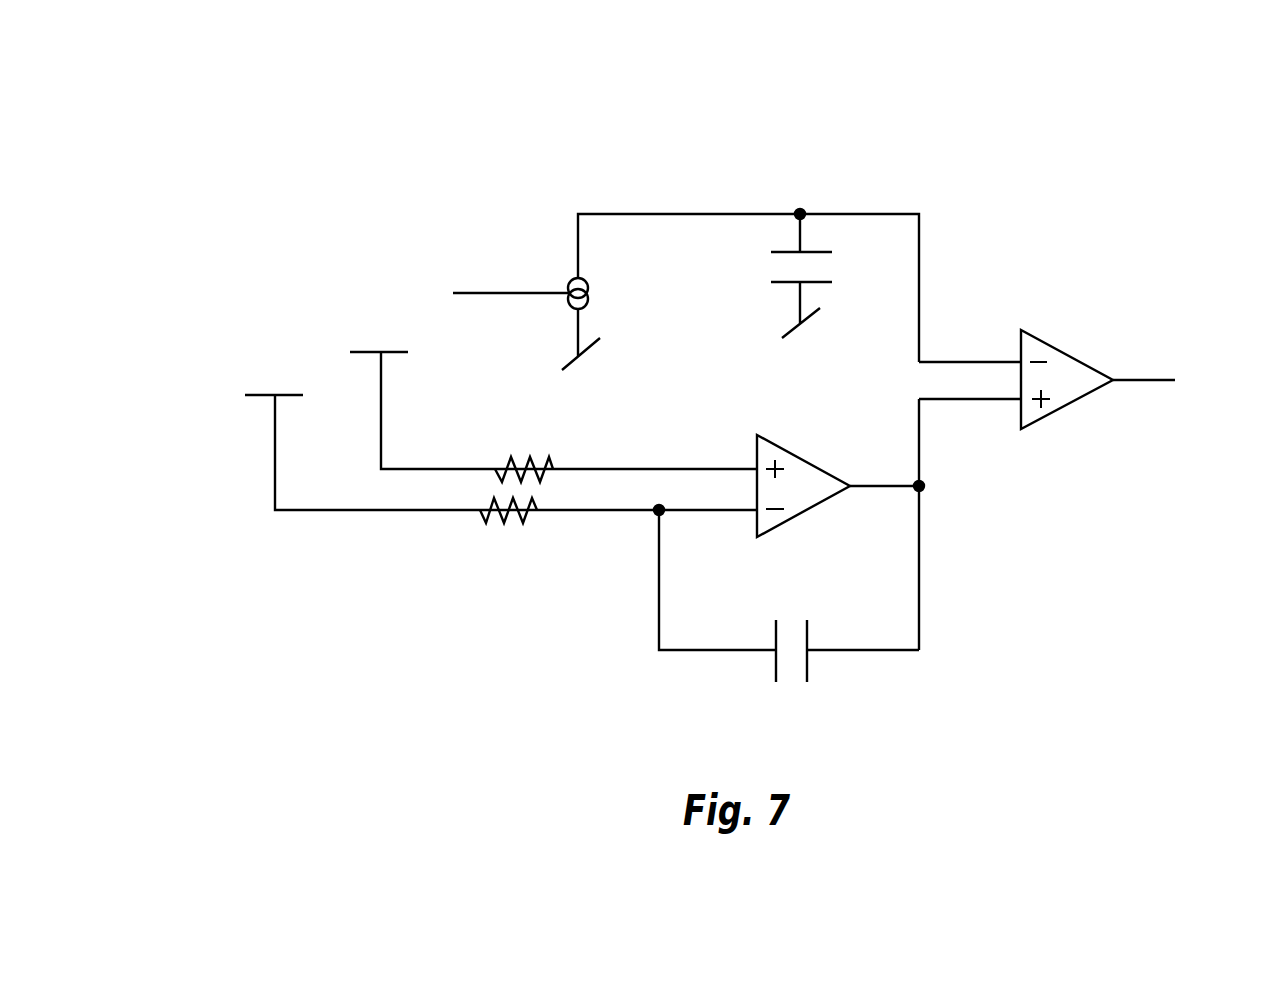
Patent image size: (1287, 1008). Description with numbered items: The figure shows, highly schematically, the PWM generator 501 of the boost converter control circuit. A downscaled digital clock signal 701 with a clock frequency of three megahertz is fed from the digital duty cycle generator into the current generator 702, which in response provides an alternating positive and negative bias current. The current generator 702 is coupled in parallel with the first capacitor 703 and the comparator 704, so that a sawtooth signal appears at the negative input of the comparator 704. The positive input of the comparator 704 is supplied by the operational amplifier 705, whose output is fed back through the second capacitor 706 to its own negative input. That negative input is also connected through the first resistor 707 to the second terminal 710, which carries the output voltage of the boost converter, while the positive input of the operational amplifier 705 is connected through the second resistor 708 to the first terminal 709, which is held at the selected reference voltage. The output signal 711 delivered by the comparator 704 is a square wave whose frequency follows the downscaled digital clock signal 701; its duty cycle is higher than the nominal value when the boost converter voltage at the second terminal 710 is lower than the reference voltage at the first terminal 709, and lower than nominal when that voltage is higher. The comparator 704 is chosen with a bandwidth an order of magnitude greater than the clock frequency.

The PWM generator 501 is at (794, 151).
The downscaled digital clock signal 701 is at (468, 292).
The current generator 702 is at (573, 284).
The first capacitor 703 is at (771, 252).
The comparator 704 is at (1032, 332).
The operational amplifier 705 is at (792, 452).
The second capacitor 706 is at (807, 672).
The first resistor 707 is at (487, 526).
The second resistor 708 is at (528, 457).
The first terminal 709 is at (350, 351).
The second terminal 710 is at (245, 394).
The output signal 711 is at (1145, 378).